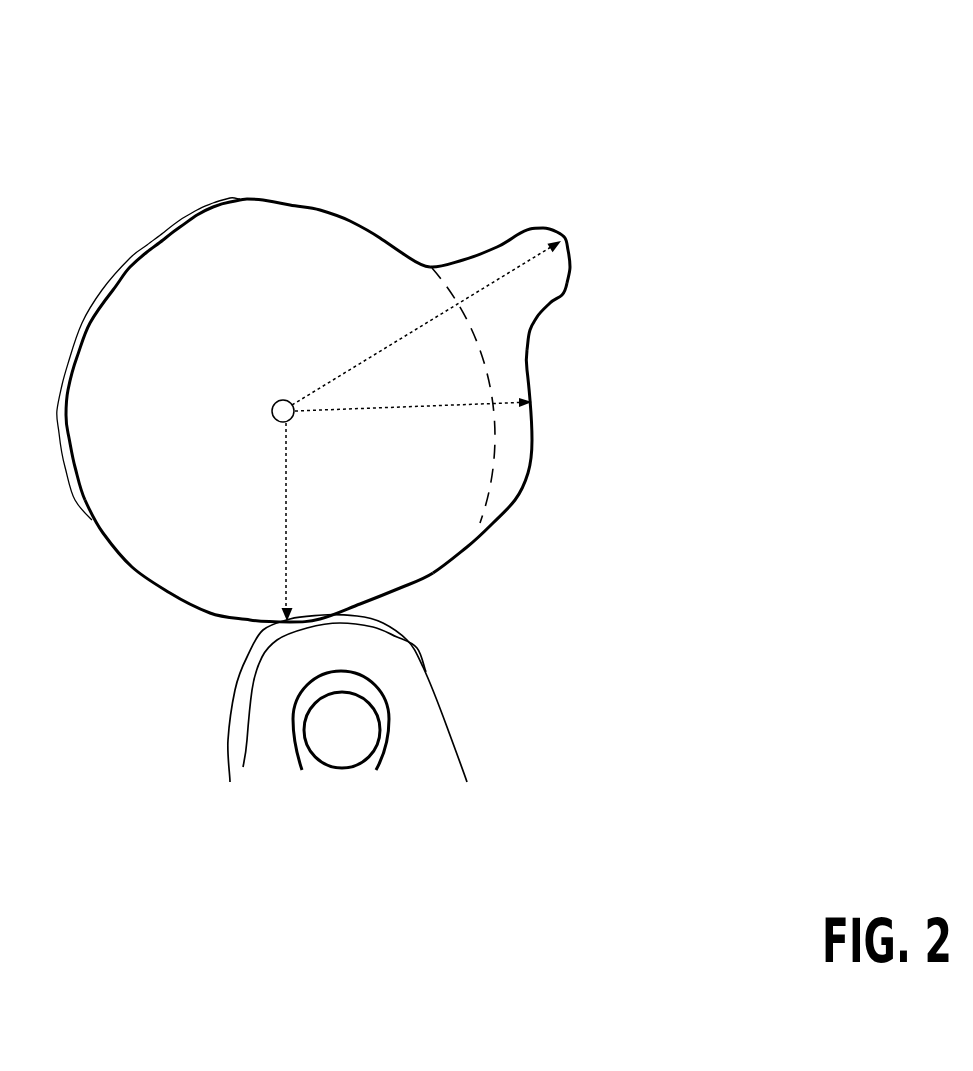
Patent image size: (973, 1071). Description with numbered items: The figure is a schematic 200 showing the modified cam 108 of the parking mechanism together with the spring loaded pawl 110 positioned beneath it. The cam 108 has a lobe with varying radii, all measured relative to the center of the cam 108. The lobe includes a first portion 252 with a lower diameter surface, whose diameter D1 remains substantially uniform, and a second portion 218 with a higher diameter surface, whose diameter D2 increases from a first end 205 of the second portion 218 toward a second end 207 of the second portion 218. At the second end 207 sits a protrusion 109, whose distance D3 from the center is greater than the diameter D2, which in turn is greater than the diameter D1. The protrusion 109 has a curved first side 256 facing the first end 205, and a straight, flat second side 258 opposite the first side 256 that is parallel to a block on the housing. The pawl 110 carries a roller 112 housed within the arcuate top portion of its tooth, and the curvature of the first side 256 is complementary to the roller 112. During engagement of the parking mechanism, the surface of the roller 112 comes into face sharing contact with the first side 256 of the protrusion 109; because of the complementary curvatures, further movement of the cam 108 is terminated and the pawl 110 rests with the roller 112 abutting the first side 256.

The schematic 200 is at (852, 80).
The modified cam 108 is at (277, 525).
The second end of the second portion 207 is at (455, 240).
The second side 258 is at (497, 248).
The protrusion 109 is at (566, 239).
The first side 256 is at (542, 313).
The second portion 218 is at (538, 405).
The first end of the second portion 205 is at (528, 500).
The first portion 252 is at (207, 615).
The pawl 110 is at (445, 728).
The roller 112 is at (403, 638).
The diameter of the first portion D1 is at (300, 522).
The diameter of the second portion D2 is at (413, 400).
The distance from center of the protrusion D3 is at (426, 323).